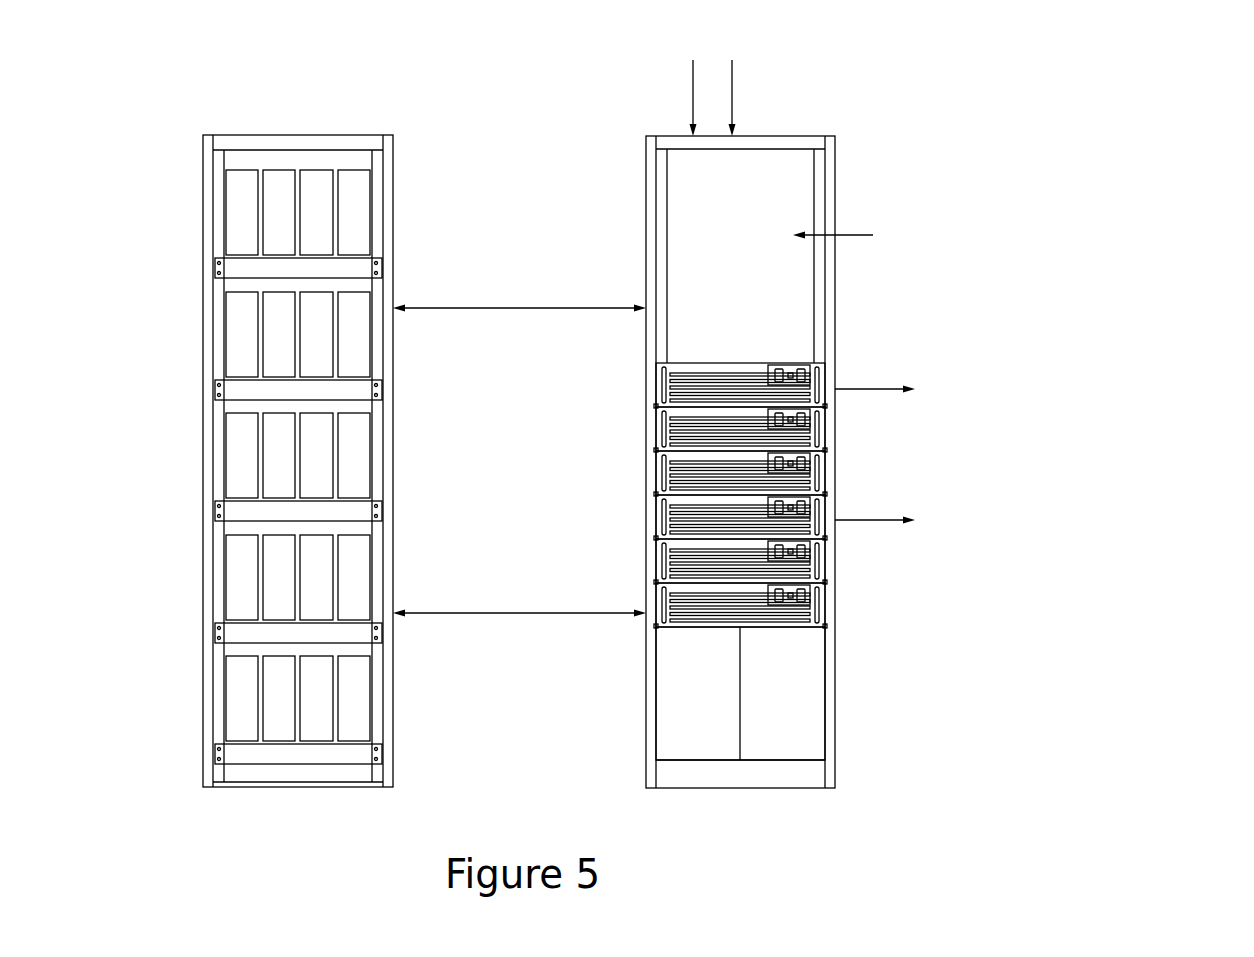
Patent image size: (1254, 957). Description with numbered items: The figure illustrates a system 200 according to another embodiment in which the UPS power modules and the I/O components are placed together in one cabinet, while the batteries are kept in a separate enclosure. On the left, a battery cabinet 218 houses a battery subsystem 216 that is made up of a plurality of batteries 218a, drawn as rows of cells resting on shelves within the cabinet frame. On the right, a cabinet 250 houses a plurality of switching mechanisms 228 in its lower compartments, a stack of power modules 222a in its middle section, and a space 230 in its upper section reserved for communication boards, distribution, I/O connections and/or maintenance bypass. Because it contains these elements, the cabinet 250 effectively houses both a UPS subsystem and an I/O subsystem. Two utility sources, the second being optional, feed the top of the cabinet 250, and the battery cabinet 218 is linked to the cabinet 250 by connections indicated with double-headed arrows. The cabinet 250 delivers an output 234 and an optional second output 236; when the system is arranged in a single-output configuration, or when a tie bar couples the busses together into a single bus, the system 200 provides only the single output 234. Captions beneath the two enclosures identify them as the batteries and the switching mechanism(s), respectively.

The system 200 is at (215, 110).
The battery subsystem 216 is at (308, 133).
The battery cabinet 218 is at (203, 183).
The batteries 218a is at (238, 322).
The power modules 222a is at (663, 423).
The switching mechanisms 228 is at (665, 708).
The space for communication boards, distribution, I/O connections and maintenance by 230 is at (803, 188).
The output 234 is at (870, 389).
The output 236 is at (865, 518).
The cabinet 250 is at (838, 756).